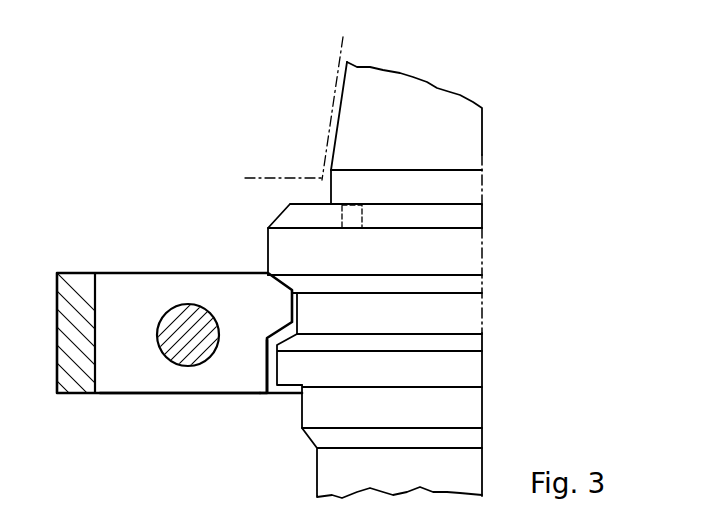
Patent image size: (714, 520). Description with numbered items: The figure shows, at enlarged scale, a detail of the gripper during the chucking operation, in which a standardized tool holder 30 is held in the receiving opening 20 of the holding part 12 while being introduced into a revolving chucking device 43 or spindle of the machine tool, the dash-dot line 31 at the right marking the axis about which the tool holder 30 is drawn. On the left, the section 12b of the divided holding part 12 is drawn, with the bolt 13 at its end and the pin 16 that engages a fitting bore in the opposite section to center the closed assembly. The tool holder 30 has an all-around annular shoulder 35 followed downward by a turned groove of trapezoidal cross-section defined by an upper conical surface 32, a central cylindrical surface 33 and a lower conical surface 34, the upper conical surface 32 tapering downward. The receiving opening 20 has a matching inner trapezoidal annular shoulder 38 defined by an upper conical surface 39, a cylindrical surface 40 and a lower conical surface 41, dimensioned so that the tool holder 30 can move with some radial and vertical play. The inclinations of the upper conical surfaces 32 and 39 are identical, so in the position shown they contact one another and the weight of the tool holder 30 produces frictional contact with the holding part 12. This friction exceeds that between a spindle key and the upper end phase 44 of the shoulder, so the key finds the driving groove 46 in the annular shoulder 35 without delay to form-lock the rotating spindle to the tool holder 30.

The holding part 12 is at (152, 247).
The section of the holding part 12b is at (128, 380).
The bolt 13 is at (72, 283).
The pin 16 is at (198, 353).
The receiving opening 20 is at (271, 363).
The tool holder 30 is at (470, 130).
The holder axis 31 is at (496, 305).
The upper conical surface 32 is at (420, 282).
The central cylindrical surface 33 is at (438, 315).
The lower conical surface 34 is at (408, 340).
The annular shoulder 35 is at (295, 237).
The inner trapezoidal annular shoulder 38 is at (281, 297).
The upper conical surface 39 is at (282, 280).
The cylindrical surface 40 is at (305, 306).
The lower conical surface 41 is at (282, 344).
The revolving chucking device 43 is at (332, 82).
The upper end phase 44 is at (421, 202).
The driving groove 46 is at (352, 213).